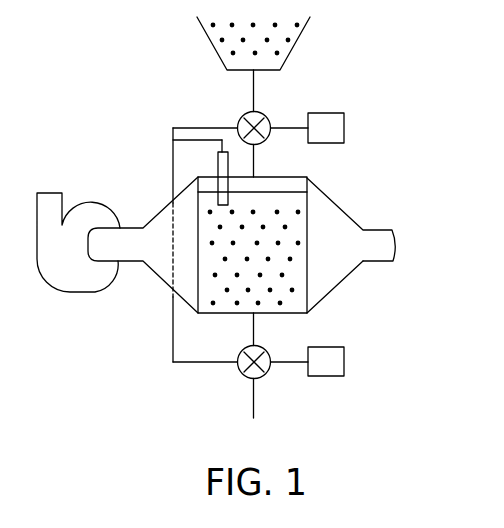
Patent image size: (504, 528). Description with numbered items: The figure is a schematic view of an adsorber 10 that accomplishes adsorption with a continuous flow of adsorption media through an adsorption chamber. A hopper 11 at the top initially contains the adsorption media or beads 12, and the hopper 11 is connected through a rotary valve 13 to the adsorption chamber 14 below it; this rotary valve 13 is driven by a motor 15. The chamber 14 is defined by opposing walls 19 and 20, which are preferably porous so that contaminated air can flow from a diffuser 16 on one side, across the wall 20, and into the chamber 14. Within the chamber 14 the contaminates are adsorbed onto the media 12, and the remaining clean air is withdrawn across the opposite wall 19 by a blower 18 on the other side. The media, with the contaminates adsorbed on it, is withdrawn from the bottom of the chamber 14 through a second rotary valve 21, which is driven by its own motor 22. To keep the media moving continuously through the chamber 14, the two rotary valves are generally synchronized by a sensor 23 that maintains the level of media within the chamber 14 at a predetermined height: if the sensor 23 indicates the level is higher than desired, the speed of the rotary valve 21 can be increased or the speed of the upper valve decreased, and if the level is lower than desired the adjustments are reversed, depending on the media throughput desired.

The adsorber 10 is at (392, 88).
The hopper 11 is at (297, 42).
The adsorption media 12 is at (260, 55).
The rotary valve 13 is at (240, 120).
The adsorption chamber 14 is at (283, 210).
The motor 15 is at (337, 143).
The diffuser 16 is at (335, 225).
The blower 18 is at (88, 224).
The wall 19 is at (200, 295).
The wall 20 is at (307, 283).
The rotary valve 21 is at (243, 375).
The motor 22 is at (331, 377).
The sensor 23 is at (218, 160).